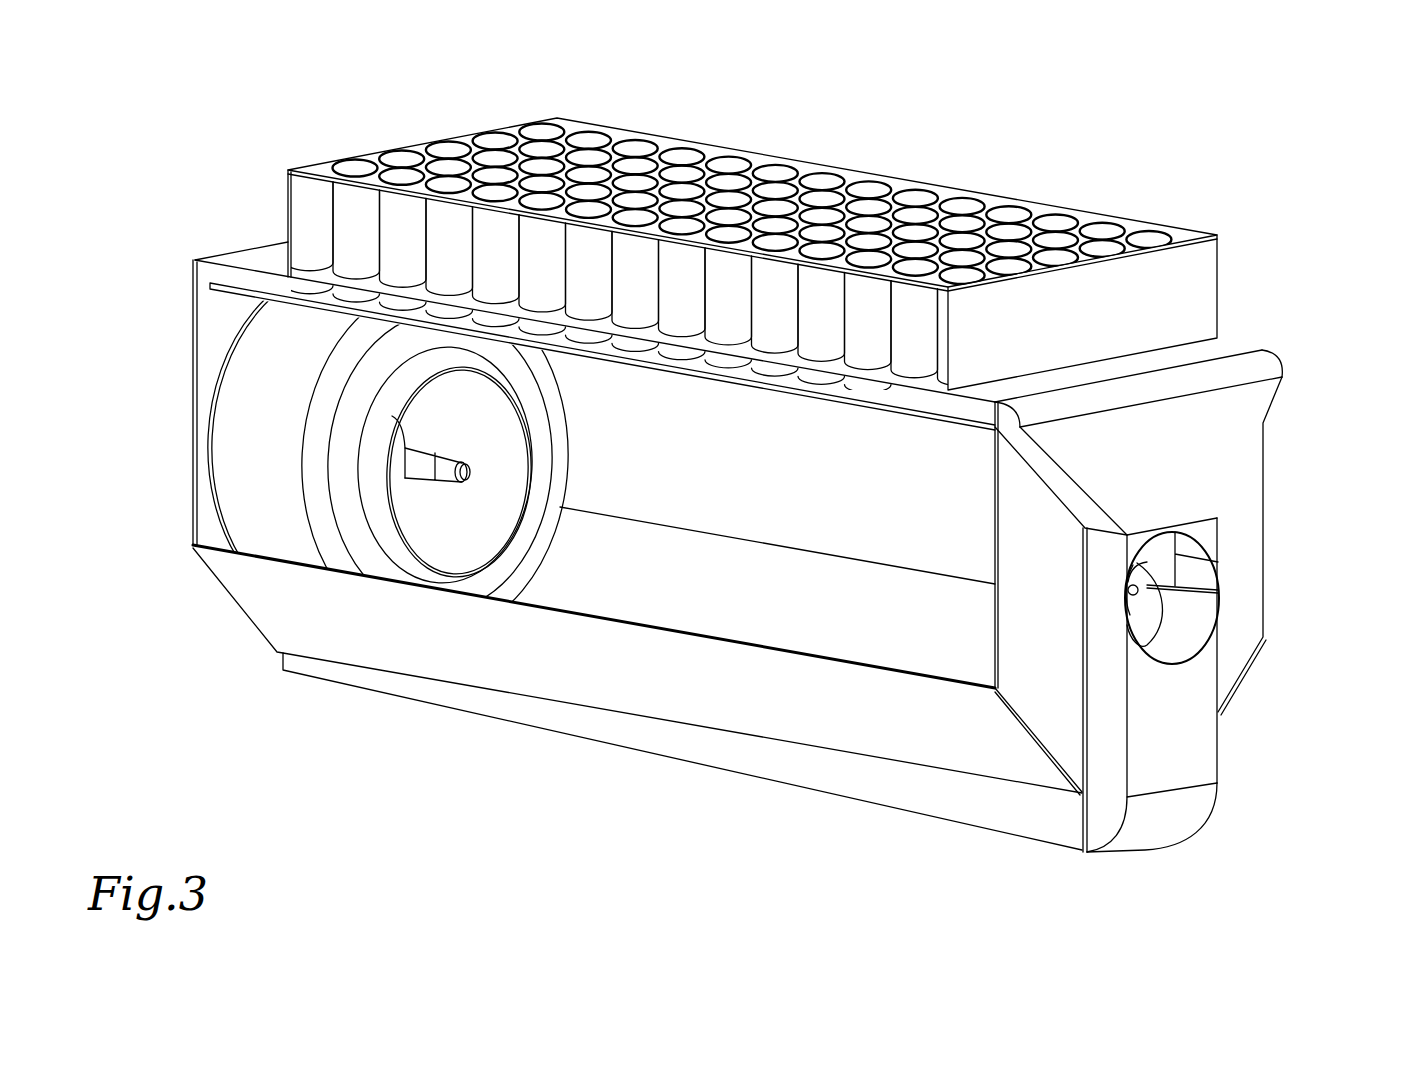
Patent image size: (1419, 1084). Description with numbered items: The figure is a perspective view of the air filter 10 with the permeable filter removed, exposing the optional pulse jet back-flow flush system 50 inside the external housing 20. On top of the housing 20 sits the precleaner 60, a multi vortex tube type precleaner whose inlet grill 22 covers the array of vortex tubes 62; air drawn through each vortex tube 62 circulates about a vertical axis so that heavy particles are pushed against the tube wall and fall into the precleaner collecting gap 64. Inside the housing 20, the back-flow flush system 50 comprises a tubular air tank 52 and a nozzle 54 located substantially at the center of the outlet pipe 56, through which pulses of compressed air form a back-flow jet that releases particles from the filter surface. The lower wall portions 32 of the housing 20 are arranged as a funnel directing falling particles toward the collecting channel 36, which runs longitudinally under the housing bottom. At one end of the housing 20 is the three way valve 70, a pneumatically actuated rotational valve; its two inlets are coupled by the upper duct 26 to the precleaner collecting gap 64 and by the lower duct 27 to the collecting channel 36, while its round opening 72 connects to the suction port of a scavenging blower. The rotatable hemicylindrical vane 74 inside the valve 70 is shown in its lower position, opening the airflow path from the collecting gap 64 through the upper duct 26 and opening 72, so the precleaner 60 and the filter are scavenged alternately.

The air filter 10 is at (1340, 116).
The external housing 20 is at (193, 552).
The inlet grill 22 is at (1100, 210).
The upper duct 26 is at (1255, 404).
The lower duct 27 is at (1213, 738).
The lower wall portions 32 is at (274, 624).
The collecting channel 36 is at (785, 765).
The pulse jet back-flow flush system 50 is at (172, 355).
The air tank 52 is at (218, 472).
The nozzle 54 is at (450, 465).
The outlet pipe 56 is at (466, 544).
The precleaner 60 is at (460, 137).
The vortex tubes 62 is at (352, 224).
The precleaner collecting gap 64 is at (275, 294).
The three way valve 70 is at (1240, 548).
The opening 72 is at (1210, 630).
The hemicylindrical vane 74 is at (1200, 606).